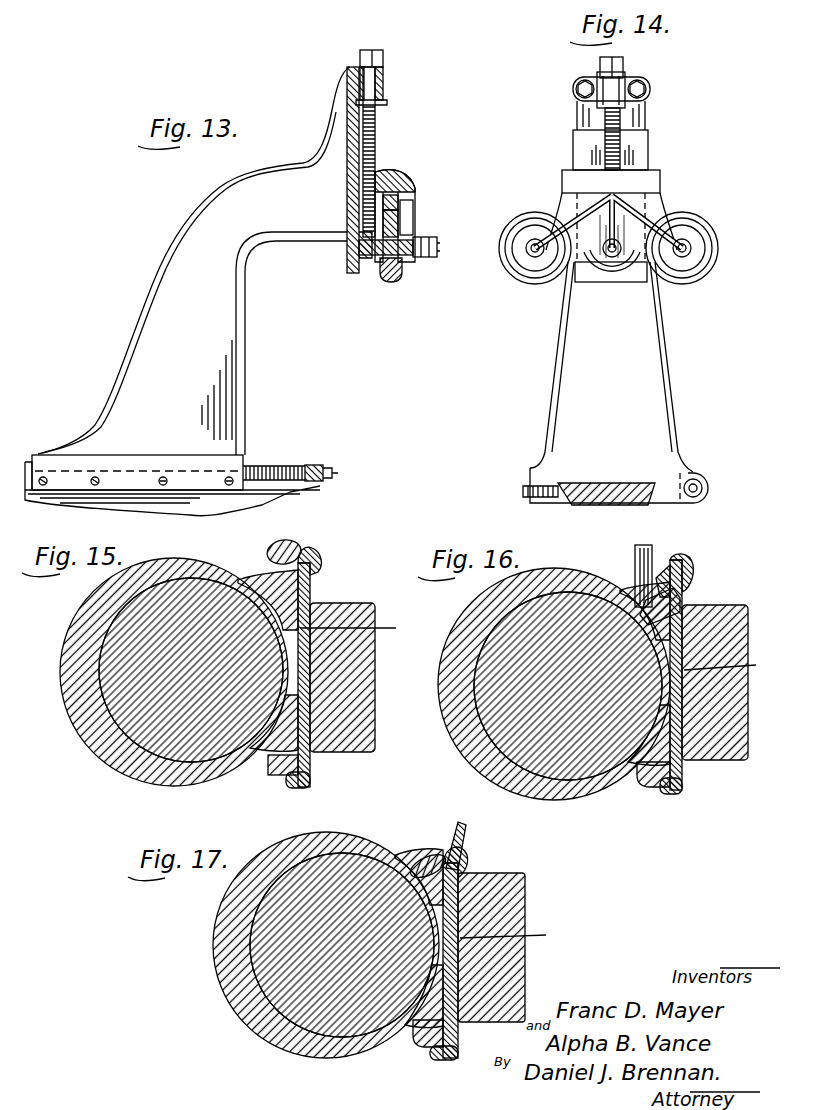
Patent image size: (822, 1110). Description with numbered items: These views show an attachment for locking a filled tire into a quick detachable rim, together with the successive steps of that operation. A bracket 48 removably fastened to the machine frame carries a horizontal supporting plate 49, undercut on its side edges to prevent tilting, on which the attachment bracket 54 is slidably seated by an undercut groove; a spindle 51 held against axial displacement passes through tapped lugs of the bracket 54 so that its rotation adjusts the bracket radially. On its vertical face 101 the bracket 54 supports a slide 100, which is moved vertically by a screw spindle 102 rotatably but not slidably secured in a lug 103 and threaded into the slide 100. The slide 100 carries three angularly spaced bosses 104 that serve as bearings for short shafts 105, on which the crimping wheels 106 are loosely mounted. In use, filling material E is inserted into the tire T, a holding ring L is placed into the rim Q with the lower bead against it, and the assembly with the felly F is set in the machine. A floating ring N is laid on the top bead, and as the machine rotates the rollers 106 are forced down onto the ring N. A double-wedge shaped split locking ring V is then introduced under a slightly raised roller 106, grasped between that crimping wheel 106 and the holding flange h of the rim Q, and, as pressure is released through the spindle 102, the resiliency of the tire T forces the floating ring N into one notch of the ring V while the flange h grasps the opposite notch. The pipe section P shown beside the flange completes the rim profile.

In FIG. 13, the attachment bracket 54 is at (134, 362).
In FIG. 14, the attachment bracket 54 is at (655, 371).
In FIG. 13, the bracket 48 is at (206, 516).
In FIG. 13, the horizontal supporting plate 49 is at (280, 468).
In FIG. 14, the horizontal supporting plate 49 is at (590, 484).
In FIG. 13, the spindle 51 is at (338, 474).
In FIG. 14, the spindle 51 is at (708, 488).
In FIG. 13, the slide 100 is at (395, 178).
In FIG. 14, the slide 100 is at (626, 186).
In FIG. 13, the vertical face 101 is at (346, 138).
In FIG. 14, the vertical face 101 is at (632, 162).
In FIG. 13, the screw spindle 102 is at (376, 138).
In FIG. 14, the screw spindle 102 is at (621, 145).
In FIG. 13, the lug 103 is at (388, 101).
In FIG. 14, the lug 103 is at (626, 80).
In FIG. 13, the boss 104 is at (408, 258).
In FIG. 14, the boss 104 is at (678, 262).
In FIG. 13, the short shaft 105 is at (410, 236).
In FIG. 13, the crimping wheel 106 is at (386, 280).
In FIG. 14, the crimping wheel 106 is at (693, 234).
In FIG. 16, the crimping wheel 106 is at (638, 556).
In FIG. 15, the floating ring N is at (298, 548).
In FIG. 16, the floating ring N is at (690, 598).
In FIG. 17, the floating ring N is at (424, 860).
In FIG. 15, the holding flange h is at (318, 564).
In FIG. 16, the holding flange h is at (694, 572).
In FIG. 17, the holding flange h is at (468, 840).
In FIG. 15, the pipe P is at (355, 629).
In FIG. 16, the pipe P is at (727, 665).
In FIG. 17, the pipe P is at (510, 936).
In FIG. 15, the felly F is at (374, 720).
In FIG. 16, the felly F is at (749, 713).
In FIG. 17, the felly F is at (524, 876).
In FIG. 15, the filling material E is at (90, 740).
In FIG. 16, the filling material E is at (475, 736).
In FIG. 17, the filling material E is at (274, 1018).
In FIG. 15, the tire T is at (106, 772).
In FIG. 16, the tire T is at (580, 790).
In FIG. 17, the tire T is at (314, 1060).
In FIG. 15, the holding ring L is at (270, 772).
In FIG. 16, the holding ring L is at (652, 787).
In FIG. 17, the holding ring L is at (414, 1040).
In FIG. 15, the quick detachable rim Q is at (312, 781).
In FIG. 16, the quick detachable rim Q is at (684, 788).
In FIG. 17, the quick detachable rim Q is at (440, 1062).
In FIG. 16, the locking ring V is at (668, 566).
In FIG. 17, the locking ring V is at (452, 848).